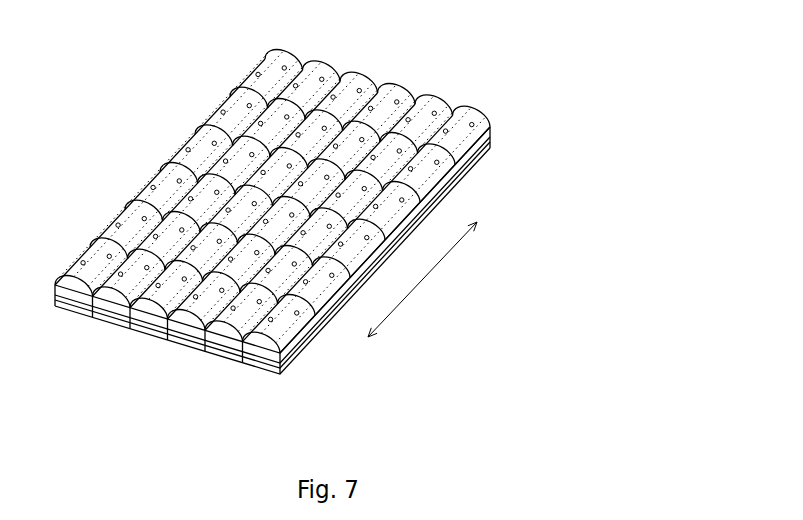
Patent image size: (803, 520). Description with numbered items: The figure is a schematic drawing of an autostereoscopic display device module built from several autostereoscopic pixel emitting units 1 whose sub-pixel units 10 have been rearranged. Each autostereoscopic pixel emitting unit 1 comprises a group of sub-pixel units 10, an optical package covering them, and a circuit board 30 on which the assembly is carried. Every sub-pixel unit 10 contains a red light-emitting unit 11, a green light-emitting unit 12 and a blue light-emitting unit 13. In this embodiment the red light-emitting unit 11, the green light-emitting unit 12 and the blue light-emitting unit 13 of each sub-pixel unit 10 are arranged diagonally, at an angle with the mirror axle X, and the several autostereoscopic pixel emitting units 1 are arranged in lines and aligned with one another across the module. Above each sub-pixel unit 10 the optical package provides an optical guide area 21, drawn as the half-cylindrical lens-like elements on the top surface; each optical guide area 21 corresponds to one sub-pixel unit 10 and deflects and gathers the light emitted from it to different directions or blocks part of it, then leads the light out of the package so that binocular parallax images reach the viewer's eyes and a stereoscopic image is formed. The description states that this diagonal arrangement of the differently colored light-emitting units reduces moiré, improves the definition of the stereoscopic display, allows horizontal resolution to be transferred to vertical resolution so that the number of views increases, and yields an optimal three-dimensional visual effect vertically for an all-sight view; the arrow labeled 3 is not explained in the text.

The autostereoscopic pixel emitting unit 1 is at (63, 256).
The light 3 is at (584, 60).
The sub-pixel unit 10 is at (82, 397).
The red light-emitting unit 11 is at (73, 300).
The green light-emitting unit 12 is at (82, 307).
The blue light-emitting unit 13 is at (97, 314).
The optical guide area 21 is at (78, 276).
The circuit board 30 is at (55, 299).
The mirror axle X is at (422, 279).